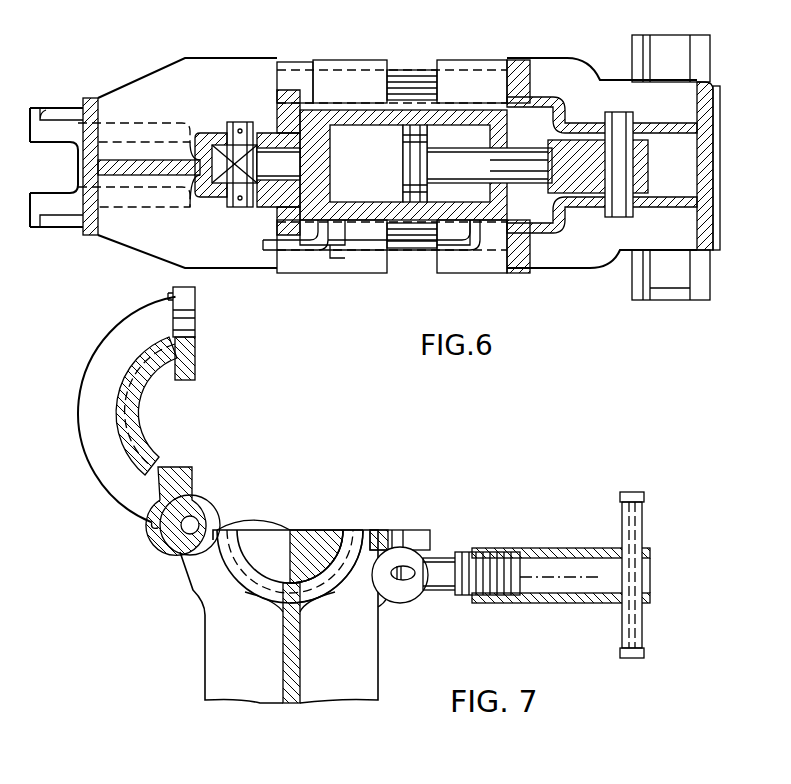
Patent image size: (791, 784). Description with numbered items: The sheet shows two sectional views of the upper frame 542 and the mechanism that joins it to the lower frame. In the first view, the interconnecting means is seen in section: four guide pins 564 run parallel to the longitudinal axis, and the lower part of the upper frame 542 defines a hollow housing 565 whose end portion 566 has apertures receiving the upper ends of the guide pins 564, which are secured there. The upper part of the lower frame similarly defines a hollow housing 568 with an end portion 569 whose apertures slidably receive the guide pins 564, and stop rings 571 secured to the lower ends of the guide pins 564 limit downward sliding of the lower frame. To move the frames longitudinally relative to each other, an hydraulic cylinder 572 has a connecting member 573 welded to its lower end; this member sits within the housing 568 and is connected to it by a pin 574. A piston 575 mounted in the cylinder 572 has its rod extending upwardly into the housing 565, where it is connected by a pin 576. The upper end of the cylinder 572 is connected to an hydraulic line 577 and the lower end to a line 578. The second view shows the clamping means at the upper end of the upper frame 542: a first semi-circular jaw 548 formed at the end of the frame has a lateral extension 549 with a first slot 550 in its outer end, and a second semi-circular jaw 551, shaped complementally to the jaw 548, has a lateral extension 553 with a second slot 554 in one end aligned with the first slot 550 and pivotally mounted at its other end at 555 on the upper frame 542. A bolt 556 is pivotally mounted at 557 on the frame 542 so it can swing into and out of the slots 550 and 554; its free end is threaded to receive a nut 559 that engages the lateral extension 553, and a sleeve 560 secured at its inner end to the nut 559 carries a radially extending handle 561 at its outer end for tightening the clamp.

In FIG. 7, the upper frame 542 is at (208, 630).
In FIG. 7, the first semi-circular jaw 548 is at (322, 556).
In FIG. 7, the lateral extension 549 is at (370, 536).
In FIG. 7, the first slot 550 is at (418, 541).
In FIG. 7, the second semi-circular jaw 551 is at (150, 422).
In FIG. 7, the lateral extension 553 is at (196, 350).
In FIG. 7, the second slot 554 is at (196, 320).
In FIG. 7, the pivot 555 is at (192, 508).
In FIG. 7, the bolt 556 is at (452, 589).
In FIG. 7, the pivot 557 is at (400, 586).
In FIG. 7, the nut 559 is at (463, 544).
In FIG. 7, the sleeve 560 is at (560, 547).
In FIG. 7, the handle 561 is at (632, 536).
In FIG. 6, the guide pins 564 is at (412, 82).
In FIG. 6, the hollow housing 565 is at (557, 80).
In FIG. 6, the end portion 566 is at (518, 262).
In FIG. 6, the hollow housing 568 is at (288, 90).
In FIG. 6, the end portion 569 is at (362, 264).
In FIG. 6, the stop rings 571 is at (308, 78).
In FIG. 6, the hydraulic cylinder 572 is at (372, 168).
In FIG. 6, the connecting member 573 is at (272, 172).
In FIG. 6, the pin 574 is at (233, 126).
In FIG. 6, the piston 575 is at (418, 166).
In FIG. 6, the pin 576 is at (618, 118).
In FIG. 6, the hydraulic line 577 is at (491, 258).
In FIG. 6, the hydraulic line 578 is at (298, 258).